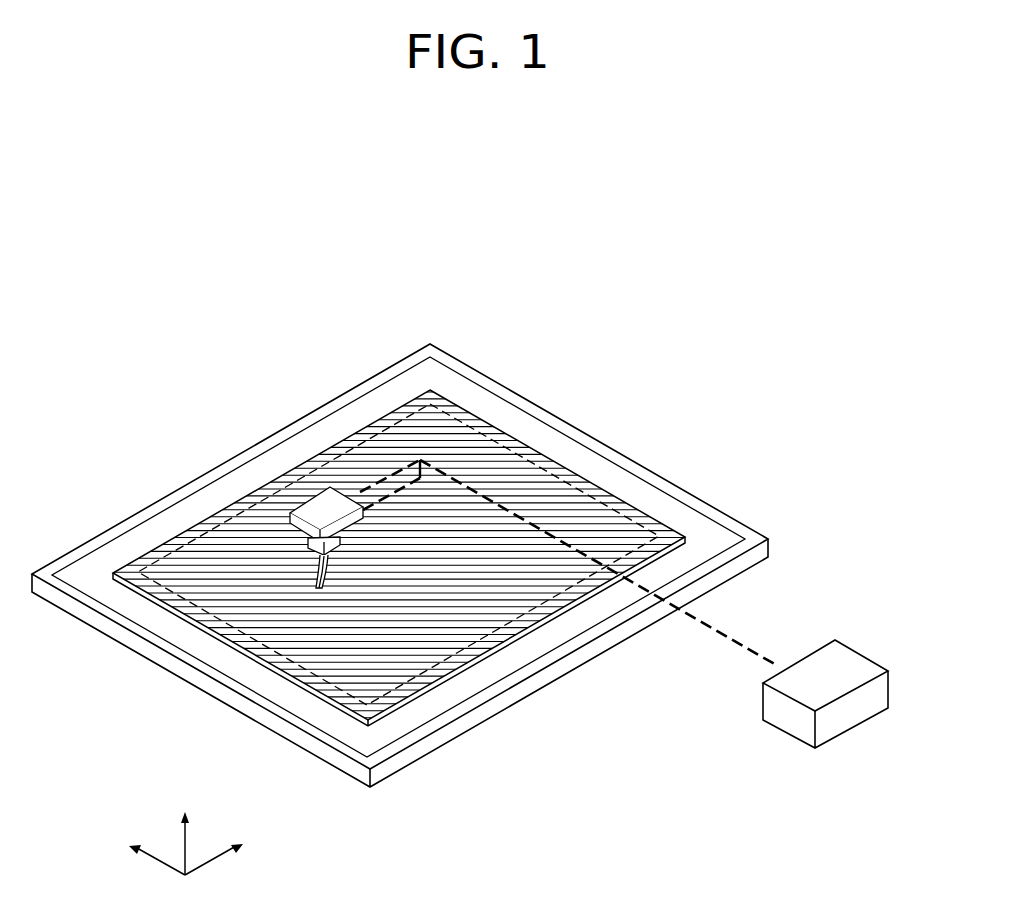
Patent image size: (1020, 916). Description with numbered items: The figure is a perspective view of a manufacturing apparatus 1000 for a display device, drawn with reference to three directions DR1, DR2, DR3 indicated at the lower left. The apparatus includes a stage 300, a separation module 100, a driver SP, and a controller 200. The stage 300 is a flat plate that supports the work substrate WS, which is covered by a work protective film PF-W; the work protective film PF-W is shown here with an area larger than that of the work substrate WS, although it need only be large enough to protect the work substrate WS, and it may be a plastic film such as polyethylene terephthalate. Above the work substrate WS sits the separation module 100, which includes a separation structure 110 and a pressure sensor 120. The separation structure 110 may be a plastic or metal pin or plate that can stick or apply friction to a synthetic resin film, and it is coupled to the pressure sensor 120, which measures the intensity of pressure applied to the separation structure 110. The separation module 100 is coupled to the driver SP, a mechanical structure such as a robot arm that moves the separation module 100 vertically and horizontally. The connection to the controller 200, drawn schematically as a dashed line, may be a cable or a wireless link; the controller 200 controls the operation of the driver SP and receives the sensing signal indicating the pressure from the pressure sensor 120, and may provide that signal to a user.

The manufacturing apparatus 1000 is at (625, 397).
The stage 300 is at (758, 552).
The work protective film PF-W is at (281, 479).
The work substrate WS is at (340, 455).
The separation module 100 is at (610, 727).
The separation structure 110 is at (330, 560).
The pressure sensor 120 is at (335, 542).
The driver SP is at (347, 520).
The controller 200 is at (848, 667).
The first direction DR1 is at (236, 850).
The second direction DR2 is at (136, 851).
The third direction DR3 is at (185, 831).